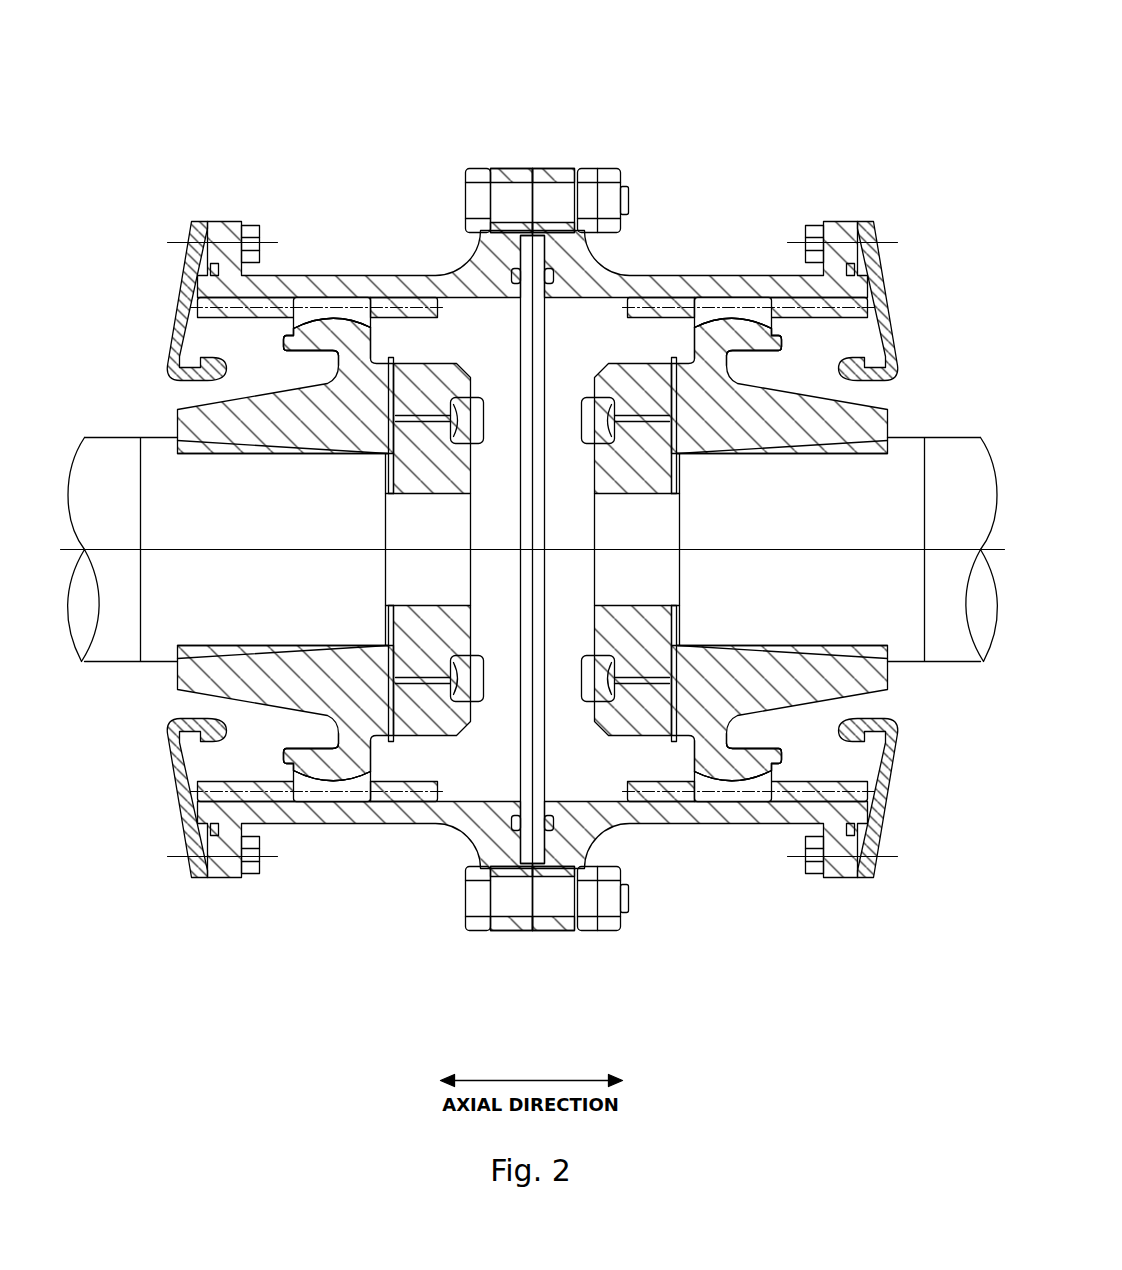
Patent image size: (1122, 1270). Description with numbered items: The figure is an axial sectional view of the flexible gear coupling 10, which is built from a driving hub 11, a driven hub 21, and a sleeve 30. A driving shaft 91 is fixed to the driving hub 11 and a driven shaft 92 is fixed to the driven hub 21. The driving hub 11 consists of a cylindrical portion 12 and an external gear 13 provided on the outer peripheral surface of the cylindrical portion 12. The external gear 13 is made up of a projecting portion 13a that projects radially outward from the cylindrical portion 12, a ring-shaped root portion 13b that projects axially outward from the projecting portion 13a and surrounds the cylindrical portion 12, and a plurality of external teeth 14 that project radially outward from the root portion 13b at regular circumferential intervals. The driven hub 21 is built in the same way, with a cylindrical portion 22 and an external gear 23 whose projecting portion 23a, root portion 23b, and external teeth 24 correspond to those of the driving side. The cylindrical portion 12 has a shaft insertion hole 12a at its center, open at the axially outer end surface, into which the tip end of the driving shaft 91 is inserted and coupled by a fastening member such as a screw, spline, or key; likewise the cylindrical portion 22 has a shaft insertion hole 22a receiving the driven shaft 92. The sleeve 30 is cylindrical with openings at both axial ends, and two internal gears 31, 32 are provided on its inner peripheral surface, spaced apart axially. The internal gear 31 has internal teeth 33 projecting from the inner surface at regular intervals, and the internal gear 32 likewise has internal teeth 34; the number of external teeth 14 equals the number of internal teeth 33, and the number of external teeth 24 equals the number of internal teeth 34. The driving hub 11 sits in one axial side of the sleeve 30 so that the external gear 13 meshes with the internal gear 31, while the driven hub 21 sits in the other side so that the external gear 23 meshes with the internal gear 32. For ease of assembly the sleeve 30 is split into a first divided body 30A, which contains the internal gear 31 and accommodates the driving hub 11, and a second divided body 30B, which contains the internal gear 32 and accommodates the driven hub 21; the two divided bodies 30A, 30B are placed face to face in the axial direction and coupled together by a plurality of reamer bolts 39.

The flexible gear coupling 10 is at (790, 100).
The driving hub 11 is at (395, 345).
The cylindrical portion 12 is at (276, 400).
The shaft insertion hole 12a is at (197, 453).
The external gear 13 is at (267, 755).
The projecting portion 13a is at (353, 730).
The root portion 13b is at (367, 803).
The external teeth 14 is at (323, 795).
The driven hub 21 is at (669, 345).
The cylindrical portion 22 is at (788, 400).
The shaft insertion hole 22a is at (867, 453).
The external gear 23 is at (797, 755).
The projecting portion 23a is at (713, 730).
The root portion 23b is at (697, 803).
The external teeth 24 is at (742, 797).
The sleeve 30 is at (483, 68).
The first divided body 30A is at (507, 167).
The second divided body 30B is at (562, 167).
The internal gear 31 is at (440, 780).
The internal gear 32 is at (624, 780).
The internal teeth 33 is at (405, 797).
The internal teeth 34 is at (660, 797).
The reamer bolts 39 is at (632, 200).
The driving shaft 91 is at (124, 646).
The driven shaft 92 is at (940, 646).